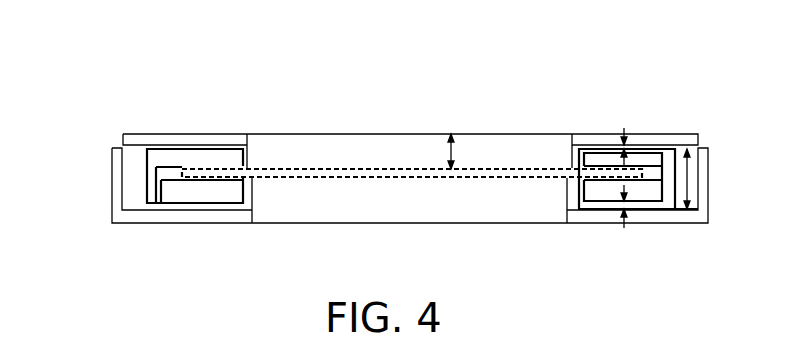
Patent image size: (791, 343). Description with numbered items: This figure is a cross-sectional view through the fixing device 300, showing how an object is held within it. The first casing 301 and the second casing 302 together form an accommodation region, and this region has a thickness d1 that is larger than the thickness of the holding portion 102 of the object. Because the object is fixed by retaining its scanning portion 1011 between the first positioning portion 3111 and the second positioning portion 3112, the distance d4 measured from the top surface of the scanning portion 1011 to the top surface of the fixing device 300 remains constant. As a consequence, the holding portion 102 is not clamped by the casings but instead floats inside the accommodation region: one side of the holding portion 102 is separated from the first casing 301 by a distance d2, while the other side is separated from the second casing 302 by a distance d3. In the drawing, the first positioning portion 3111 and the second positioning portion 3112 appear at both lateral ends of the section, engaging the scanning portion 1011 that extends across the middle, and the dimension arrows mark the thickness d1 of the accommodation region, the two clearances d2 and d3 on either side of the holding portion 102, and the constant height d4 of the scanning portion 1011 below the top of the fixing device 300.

The fixing device 300 is at (60, 43).
The first casing 301 is at (137, 133).
The second casing 302 is at (113, 197).
The holding portion 102 is at (194, 160).
The second positioning portion 3112 is at (248, 164).
The first positioning portion 3111 is at (250, 192).
The scanning portion 1011 is at (349, 168).
The thickness of accommodation region d1 is at (689, 171).
The distance between holding portion and first casing d2 is at (624, 145).
The distance between holding portion and second casing d3 is at (626, 207).
The distance from scanning portion top surface to fixing device top surface d4 is at (450, 147).